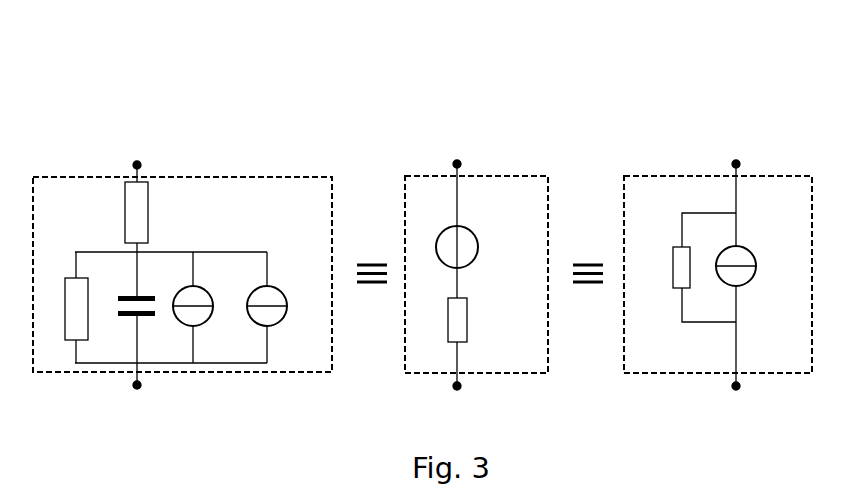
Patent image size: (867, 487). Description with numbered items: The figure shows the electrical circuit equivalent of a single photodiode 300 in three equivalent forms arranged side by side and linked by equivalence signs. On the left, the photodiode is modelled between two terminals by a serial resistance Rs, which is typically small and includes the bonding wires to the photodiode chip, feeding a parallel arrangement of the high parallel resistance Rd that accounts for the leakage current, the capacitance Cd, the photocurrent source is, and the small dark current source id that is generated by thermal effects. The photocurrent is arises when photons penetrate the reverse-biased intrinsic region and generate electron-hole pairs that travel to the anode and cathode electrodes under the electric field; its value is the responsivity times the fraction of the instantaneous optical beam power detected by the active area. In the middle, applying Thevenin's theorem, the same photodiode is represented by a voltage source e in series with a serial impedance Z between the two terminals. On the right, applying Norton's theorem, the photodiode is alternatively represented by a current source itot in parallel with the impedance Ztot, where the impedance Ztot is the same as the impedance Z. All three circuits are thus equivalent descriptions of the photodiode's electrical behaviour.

The electrical circuit equivalent of a single photodiode 300 is at (184, 68).
The serial resistance Rs is at (152, 212).
The parallel resistance Rd is at (62, 307).
The capacitance Cd is at (123, 314).
The photocurrent is is at (228, 285).
The dark current id is at (300, 285).
The voltage source e is at (485, 246).
The serial impedance Z is at (469, 320).
The impedance Ztot is at (686, 267).
The current source itot is at (770, 242).